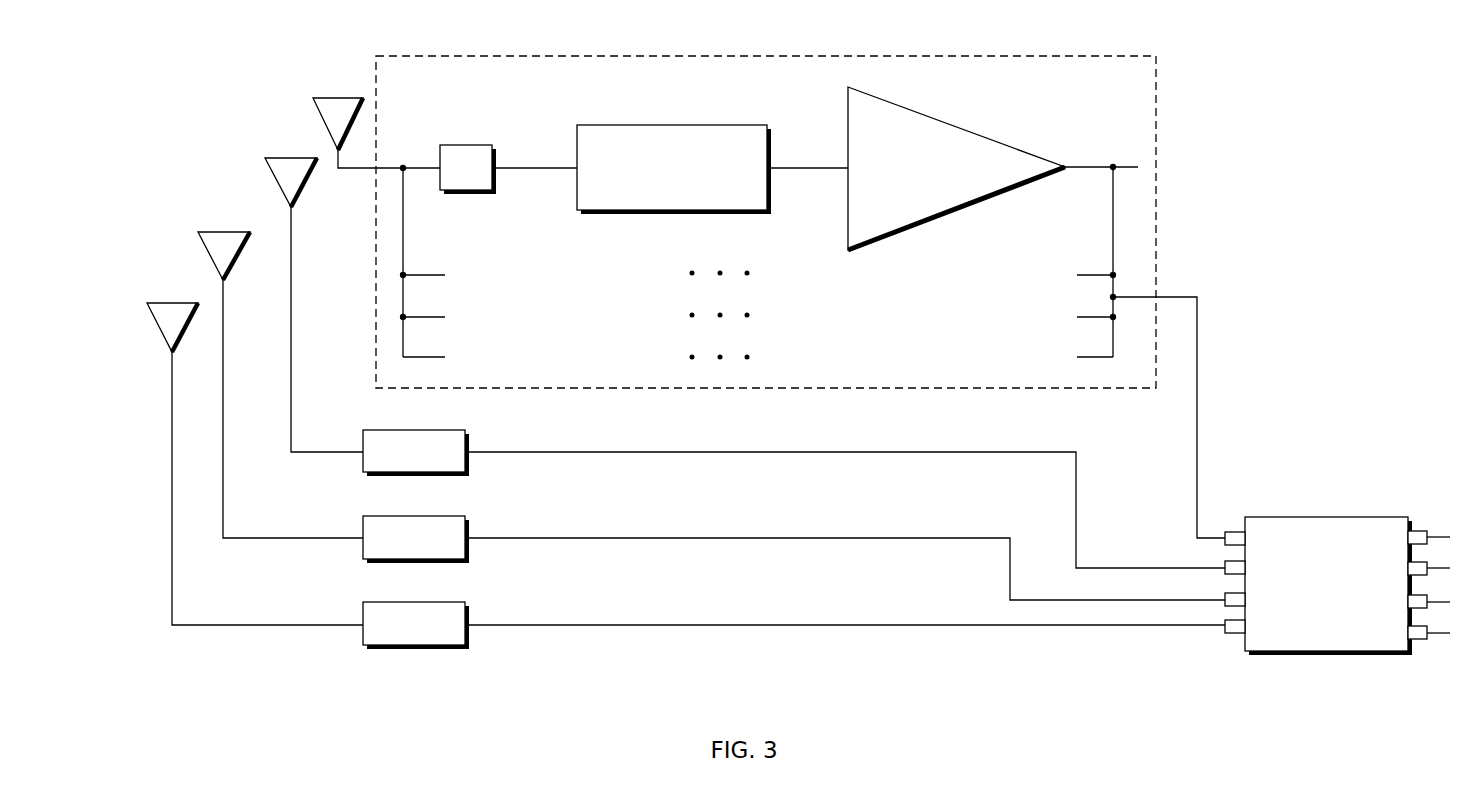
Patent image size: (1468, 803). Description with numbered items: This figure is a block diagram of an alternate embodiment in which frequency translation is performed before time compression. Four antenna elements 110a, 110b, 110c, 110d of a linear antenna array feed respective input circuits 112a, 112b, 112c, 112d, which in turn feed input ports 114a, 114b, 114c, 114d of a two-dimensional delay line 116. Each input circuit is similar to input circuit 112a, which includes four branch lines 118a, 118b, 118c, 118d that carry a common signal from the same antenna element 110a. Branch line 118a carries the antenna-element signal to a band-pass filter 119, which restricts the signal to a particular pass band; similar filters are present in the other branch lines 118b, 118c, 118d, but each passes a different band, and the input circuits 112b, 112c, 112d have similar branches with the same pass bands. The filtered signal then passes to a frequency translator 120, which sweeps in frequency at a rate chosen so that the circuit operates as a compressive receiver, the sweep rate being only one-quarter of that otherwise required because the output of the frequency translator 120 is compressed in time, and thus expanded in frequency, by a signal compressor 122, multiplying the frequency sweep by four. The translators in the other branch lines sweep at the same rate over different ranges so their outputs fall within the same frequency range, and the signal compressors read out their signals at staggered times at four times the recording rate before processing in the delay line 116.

The antenna element 110a is at (338, 97).
The antenna element 110b is at (292, 157).
The antenna element 110c is at (223, 231).
The antenna element 110d is at (172, 302).
The input circuit 112a is at (1087, 87).
The input circuit 112b is at (440, 466).
The input circuit 112c is at (440, 552).
The input circuit 112d is at (440, 639).
The input port 114a is at (1226, 531).
The input port 114b is at (1225, 560).
The input port 114c is at (1225, 594).
The input port 114d is at (1227, 634).
The two-dimensional delay line 116 is at (1307, 592).
The branch line 118a is at (403, 167).
The branch line 118b is at (420, 275).
The branch line 118c is at (420, 317).
The branch line 118d is at (422, 357).
The band-pass filter 119 is at (448, 181).
The frequency translator 120 is at (668, 124).
The signal compressor 122 is at (935, 123).